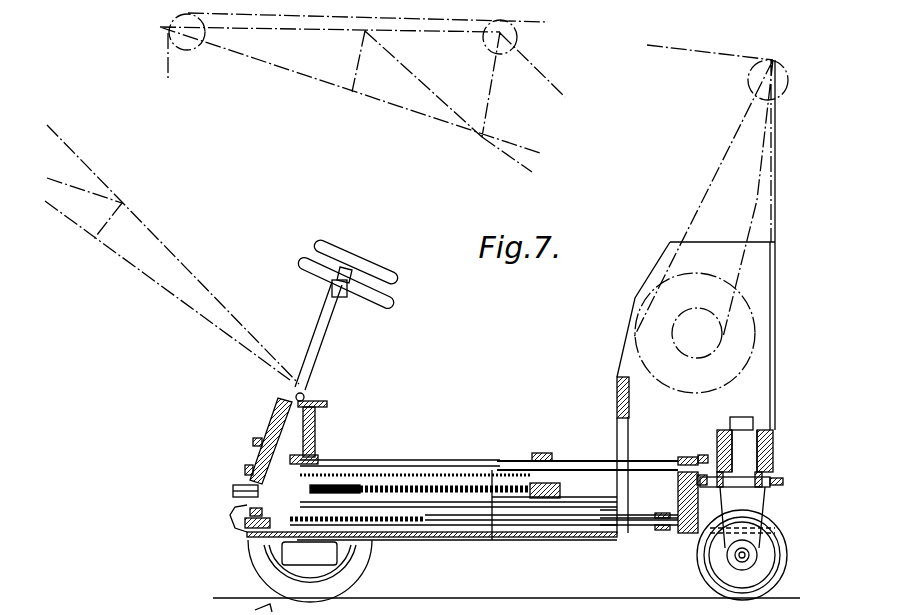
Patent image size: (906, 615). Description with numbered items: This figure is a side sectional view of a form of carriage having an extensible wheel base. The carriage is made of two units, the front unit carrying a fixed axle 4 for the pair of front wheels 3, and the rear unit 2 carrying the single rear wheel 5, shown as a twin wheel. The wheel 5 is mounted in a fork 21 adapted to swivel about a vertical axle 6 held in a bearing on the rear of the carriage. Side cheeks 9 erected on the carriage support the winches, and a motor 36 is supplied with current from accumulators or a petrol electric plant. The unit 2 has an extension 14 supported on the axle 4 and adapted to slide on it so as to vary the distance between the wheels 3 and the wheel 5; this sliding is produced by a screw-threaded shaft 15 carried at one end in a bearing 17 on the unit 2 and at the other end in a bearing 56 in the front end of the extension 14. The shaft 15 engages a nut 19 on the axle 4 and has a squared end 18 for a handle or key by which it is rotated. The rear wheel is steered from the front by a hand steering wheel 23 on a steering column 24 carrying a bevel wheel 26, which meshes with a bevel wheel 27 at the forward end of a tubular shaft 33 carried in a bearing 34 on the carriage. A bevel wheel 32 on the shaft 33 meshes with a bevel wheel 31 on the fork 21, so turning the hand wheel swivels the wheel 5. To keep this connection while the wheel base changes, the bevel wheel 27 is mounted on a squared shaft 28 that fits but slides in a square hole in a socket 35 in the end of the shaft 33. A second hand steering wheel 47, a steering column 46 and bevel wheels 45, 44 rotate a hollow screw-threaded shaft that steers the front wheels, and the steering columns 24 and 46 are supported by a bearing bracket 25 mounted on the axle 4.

The unit 2 is at (590, 528).
The wheel 3 is at (260, 557).
The axle 4 is at (316, 430).
The wheel 5 is at (785, 563).
The vertical axle 6 is at (745, 443).
The side cheeks 9 is at (762, 273).
The extension 14 is at (408, 537).
The screw-threaded shaft 15 is at (515, 521).
The bearing 17 is at (662, 515).
The squared end 18 is at (252, 523).
The nut 19 is at (273, 563).
The fork 21 is at (755, 504).
The hand steering wheel 23 is at (388, 300).
The steering column 24 is at (322, 322).
The bearing bracket 25 is at (278, 402).
The bevel wheel 26 is at (256, 442).
The bevel wheel 27 is at (316, 456).
The squared shaft 28 is at (390, 462).
The bevel wheel 31 is at (783, 480).
The bevel wheel 32 is at (703, 455).
The shaft 33 is at (588, 461).
The bearing 34 is at (688, 455).
The socket 35 is at (522, 453).
The motor 36 is at (309, 553).
The bevel wheel 44 is at (243, 495).
The bevel wheel 45 is at (245, 469).
The steering column 46 is at (303, 392).
The hand steering wheel 47 is at (338, 245).
The bearing 56 is at (255, 513).